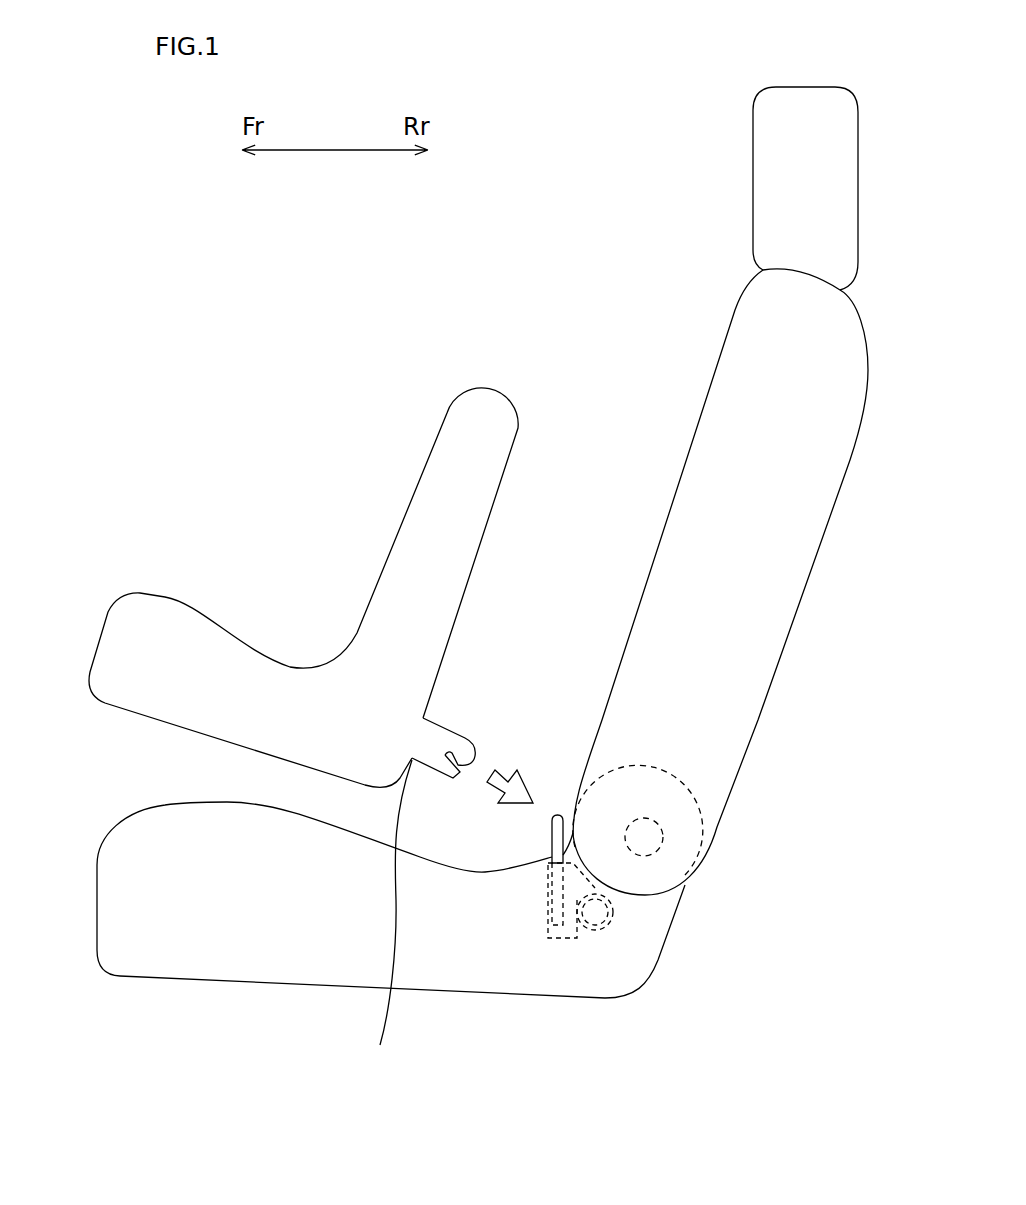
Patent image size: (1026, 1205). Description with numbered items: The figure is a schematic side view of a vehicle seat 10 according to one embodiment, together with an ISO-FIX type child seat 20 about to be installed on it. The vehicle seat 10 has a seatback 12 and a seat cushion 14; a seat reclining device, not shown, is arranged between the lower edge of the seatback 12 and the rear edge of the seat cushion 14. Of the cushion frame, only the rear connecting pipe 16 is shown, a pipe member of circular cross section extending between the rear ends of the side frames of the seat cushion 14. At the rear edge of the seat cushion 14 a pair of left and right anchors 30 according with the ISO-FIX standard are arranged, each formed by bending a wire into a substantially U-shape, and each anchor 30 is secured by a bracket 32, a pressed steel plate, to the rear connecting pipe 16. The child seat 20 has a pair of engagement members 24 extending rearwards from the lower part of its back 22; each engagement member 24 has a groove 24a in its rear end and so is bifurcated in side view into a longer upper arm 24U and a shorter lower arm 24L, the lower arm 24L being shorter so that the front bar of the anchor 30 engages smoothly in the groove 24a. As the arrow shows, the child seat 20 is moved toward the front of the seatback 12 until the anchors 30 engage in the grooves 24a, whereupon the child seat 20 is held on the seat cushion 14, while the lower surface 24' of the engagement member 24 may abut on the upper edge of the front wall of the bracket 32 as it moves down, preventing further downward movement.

The vehicle seat 10 is at (460, 578).
The seatback 12 is at (793, 560).
The seat cushion 14 is at (115, 932).
The rear connecting pipe 16 is at (613, 915).
The child seat 20 is at (329, 595).
The back 22 is at (470, 565).
The engagement member 24 is at (489, 723).
The upper arm 24U is at (462, 738).
The lower arm 24L is at (442, 764).
The groove 24a is at (480, 762).
The anchor 30 is at (525, 835).
The bracket 32 is at (563, 937).
The lower surface of the engagement member 24' is at (387, 912).